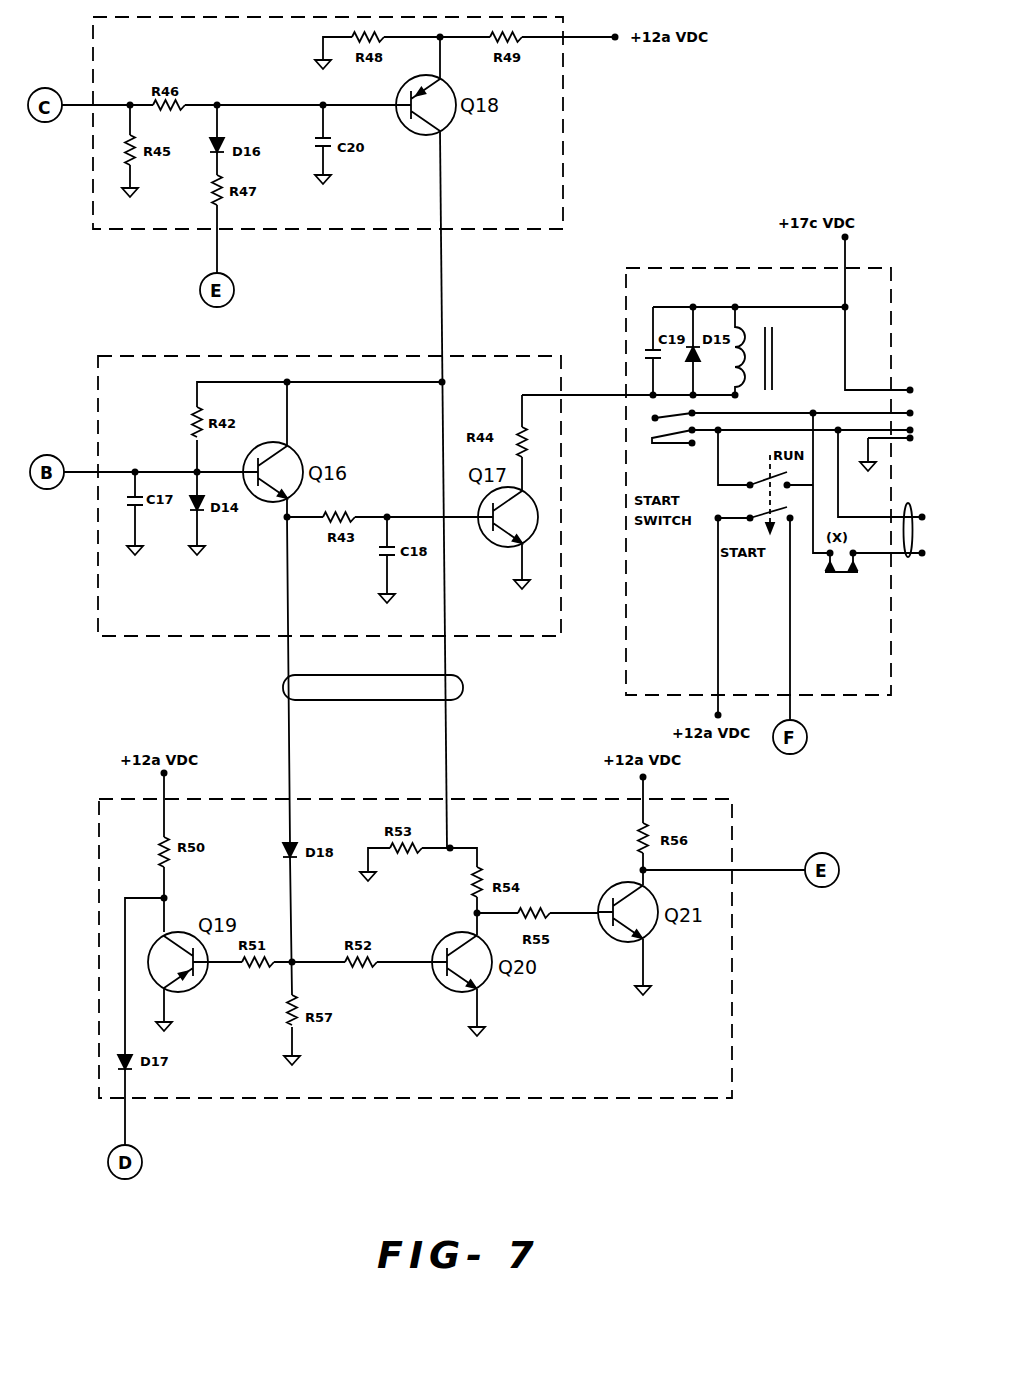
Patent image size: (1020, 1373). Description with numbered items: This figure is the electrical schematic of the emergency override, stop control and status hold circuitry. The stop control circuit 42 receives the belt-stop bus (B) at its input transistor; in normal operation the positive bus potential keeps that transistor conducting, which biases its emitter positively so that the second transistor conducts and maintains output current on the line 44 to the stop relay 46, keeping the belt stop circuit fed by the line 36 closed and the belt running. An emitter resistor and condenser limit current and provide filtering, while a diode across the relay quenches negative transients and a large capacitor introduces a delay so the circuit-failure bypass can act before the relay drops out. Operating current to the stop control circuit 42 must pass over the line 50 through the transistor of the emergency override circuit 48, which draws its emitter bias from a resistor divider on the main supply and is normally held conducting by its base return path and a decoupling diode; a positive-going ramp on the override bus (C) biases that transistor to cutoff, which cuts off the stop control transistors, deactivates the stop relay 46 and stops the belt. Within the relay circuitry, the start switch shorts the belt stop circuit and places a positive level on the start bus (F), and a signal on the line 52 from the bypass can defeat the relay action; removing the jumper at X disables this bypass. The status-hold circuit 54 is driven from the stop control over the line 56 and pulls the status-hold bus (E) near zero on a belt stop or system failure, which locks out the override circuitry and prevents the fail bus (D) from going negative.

The line to belt stop circuit 36 is at (923, 380).
The stop control circuit 42 is at (98, 358).
The output line 44 is at (600, 394).
The stop relay 46 is at (622, 318).
The emergency override circuit 48 is at (107, 234).
The line from override to stop control 50 is at (440, 316).
The bypass signal line 52 is at (910, 558).
The status-hold circuit 54 is at (97, 802).
The belt failure line 56 is at (383, 700).